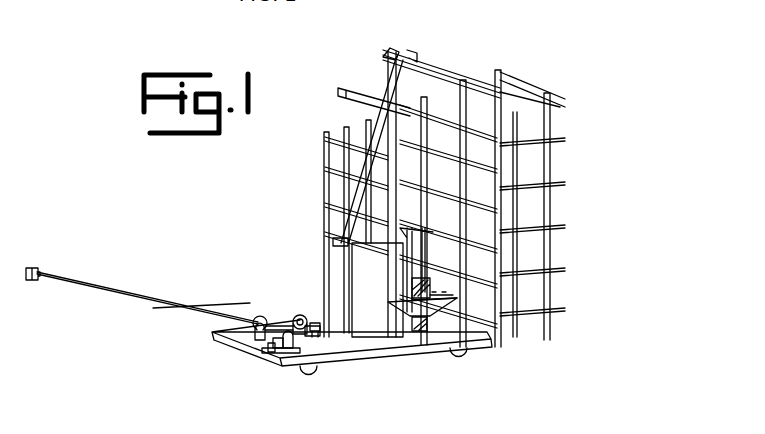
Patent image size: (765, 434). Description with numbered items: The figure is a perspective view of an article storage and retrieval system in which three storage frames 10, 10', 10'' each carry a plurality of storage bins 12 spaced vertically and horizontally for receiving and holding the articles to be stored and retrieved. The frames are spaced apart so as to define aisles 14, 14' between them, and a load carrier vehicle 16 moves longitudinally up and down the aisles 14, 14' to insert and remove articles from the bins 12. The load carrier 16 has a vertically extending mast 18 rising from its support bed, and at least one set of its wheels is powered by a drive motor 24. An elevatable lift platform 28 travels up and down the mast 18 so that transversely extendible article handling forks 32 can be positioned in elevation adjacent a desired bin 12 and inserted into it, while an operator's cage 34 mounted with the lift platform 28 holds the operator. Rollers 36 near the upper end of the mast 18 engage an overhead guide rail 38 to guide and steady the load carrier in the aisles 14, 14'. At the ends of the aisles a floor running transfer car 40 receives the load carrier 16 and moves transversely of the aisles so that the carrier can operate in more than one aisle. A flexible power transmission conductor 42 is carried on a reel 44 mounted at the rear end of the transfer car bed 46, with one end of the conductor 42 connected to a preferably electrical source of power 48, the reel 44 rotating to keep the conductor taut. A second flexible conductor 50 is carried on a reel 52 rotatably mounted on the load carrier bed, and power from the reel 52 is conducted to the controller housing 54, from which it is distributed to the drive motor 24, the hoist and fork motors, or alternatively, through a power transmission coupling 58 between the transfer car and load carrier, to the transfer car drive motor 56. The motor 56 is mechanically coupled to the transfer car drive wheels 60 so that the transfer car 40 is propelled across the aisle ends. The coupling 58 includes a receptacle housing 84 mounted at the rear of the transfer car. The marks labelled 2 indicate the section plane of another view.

The storage frame 10 is at (582, 86).
The storage frame 10' is at (506, 67).
The storage frame 10'' is at (351, 212).
The storage bins 12 is at (452, 176).
The aisle 14 is at (512, 200).
The aisle 14' is at (342, 78).
The load carrier vehicle 16 is at (322, 260).
The mast 18 is at (403, 83).
The drive motor 24 is at (308, 320).
The lift platform 28 is at (428, 331).
The article handling forks 32 is at (433, 295).
The operator's cage 34 is at (412, 292).
The rollers 36 is at (386, 50).
The overhead guide rail 38 is at (480, 78).
The transfer car 40 is at (370, 355).
The flexible power transmission conductor 42 is at (102, 284).
The reel 44 is at (275, 318).
The transfer car bed 46 is at (272, 357).
The source of power 48 is at (28, 281).
The flexible power transmission conductor 50 is at (277, 317).
The reel 52 is at (297, 316).
The controller housing 54 is at (384, 273).
The transfer car drive motor 56 is at (287, 349).
The power transmission coupling 58 is at (263, 352).
The transfer car drive wheels 60 is at (312, 374).
The receptacle housing 84 is at (278, 349).
The section line 2 is at (163, 345).